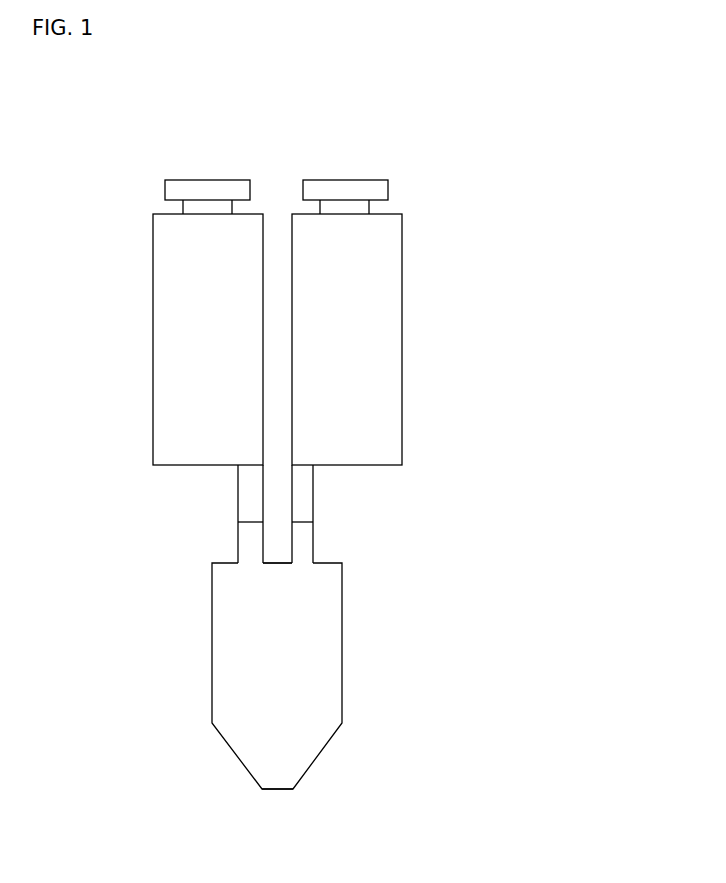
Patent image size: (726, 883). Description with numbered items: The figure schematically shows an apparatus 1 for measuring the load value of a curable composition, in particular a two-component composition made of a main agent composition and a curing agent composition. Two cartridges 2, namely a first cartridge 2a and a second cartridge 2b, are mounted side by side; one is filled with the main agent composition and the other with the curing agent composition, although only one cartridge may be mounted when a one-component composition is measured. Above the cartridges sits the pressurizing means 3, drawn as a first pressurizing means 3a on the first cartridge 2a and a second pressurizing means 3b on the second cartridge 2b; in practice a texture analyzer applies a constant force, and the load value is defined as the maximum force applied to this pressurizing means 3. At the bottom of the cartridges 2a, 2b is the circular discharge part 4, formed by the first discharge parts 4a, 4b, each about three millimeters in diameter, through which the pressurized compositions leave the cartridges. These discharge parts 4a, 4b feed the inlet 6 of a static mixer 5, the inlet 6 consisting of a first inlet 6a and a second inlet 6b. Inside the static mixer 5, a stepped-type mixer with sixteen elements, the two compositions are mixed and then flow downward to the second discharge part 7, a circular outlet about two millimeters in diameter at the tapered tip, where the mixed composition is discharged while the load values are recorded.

The apparatus for measuring the load value 1 is at (424, 165).
The cartridges 2 is at (73, 315).
The first cartridge 2a is at (200, 310).
The second cartridge 2b is at (333, 370).
The pressurizing means 3 is at (360, 138).
The first pressurizing means 3a is at (213, 192).
The second pressurizing means 3b is at (348, 192).
The discharge part 4 is at (380, 475).
The first discharge part 4a is at (257, 483).
The first discharge part 4b is at (303, 504).
The static mixer 5 is at (327, 640).
The inlet of the mixer 6 is at (173, 515).
The first inlet of the mixer 6a is at (252, 529).
The second inlet of the mixer 6b is at (297, 548).
The second discharge part 7 is at (277, 793).